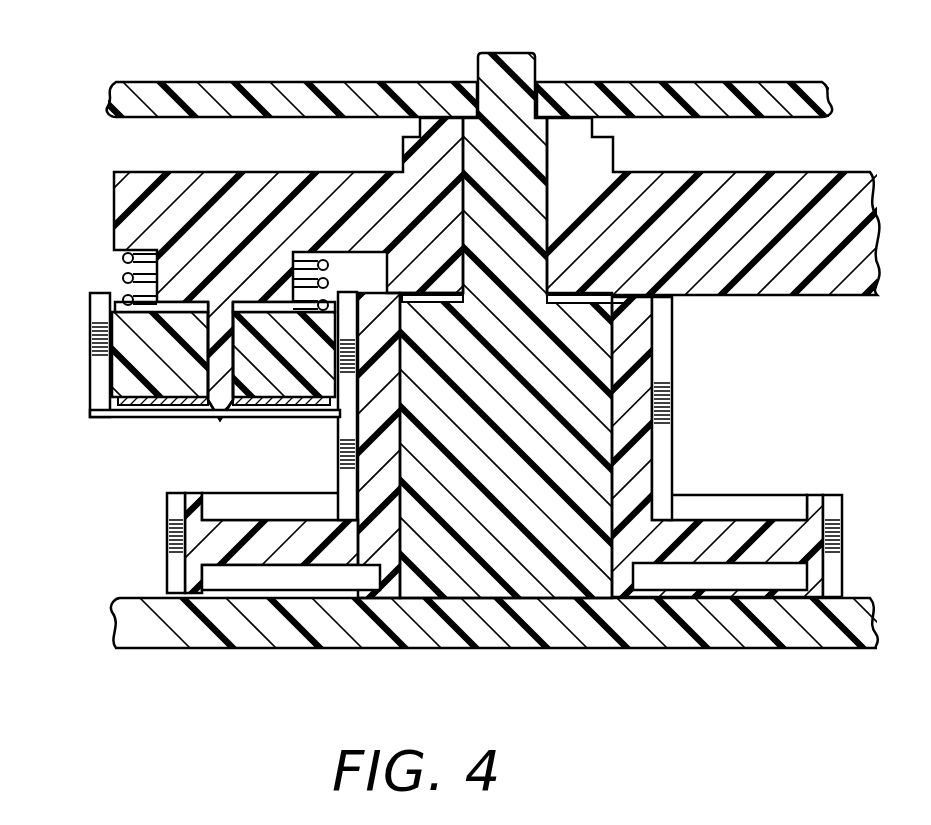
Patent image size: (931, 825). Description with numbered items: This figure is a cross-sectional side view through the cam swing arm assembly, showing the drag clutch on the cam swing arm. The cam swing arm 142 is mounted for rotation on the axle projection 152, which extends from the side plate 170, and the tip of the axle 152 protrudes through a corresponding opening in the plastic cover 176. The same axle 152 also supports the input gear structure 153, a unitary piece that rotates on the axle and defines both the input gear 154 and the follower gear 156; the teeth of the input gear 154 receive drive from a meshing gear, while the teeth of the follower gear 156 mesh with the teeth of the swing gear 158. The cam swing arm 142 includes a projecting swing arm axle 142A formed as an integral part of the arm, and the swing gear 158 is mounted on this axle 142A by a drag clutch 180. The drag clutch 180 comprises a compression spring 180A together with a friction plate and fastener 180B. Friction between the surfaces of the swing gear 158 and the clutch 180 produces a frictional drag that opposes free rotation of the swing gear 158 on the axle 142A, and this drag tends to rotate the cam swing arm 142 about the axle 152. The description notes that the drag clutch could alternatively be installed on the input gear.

The cam swing arm 142 is at (114, 186).
The swing arm axle 142A is at (219, 422).
The axle projection 152 is at (510, 54).
The input gear structure 153 is at (630, 458).
The input gear 154 is at (170, 520).
The follower gear 156 is at (668, 340).
The swing gear 158 is at (98, 326).
The side plate 170 is at (140, 598).
The plastic cover 176 is at (775, 105).
The drag clutch 180 is at (114, 428).
The compression spring 180A is at (125, 274).
The friction plate and fastener 180B is at (156, 404).